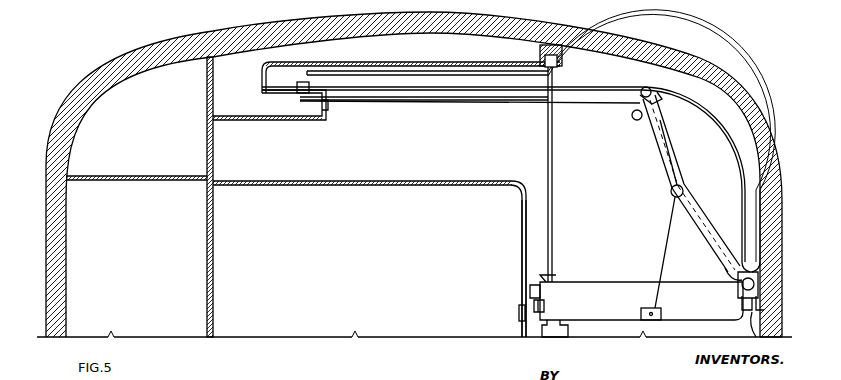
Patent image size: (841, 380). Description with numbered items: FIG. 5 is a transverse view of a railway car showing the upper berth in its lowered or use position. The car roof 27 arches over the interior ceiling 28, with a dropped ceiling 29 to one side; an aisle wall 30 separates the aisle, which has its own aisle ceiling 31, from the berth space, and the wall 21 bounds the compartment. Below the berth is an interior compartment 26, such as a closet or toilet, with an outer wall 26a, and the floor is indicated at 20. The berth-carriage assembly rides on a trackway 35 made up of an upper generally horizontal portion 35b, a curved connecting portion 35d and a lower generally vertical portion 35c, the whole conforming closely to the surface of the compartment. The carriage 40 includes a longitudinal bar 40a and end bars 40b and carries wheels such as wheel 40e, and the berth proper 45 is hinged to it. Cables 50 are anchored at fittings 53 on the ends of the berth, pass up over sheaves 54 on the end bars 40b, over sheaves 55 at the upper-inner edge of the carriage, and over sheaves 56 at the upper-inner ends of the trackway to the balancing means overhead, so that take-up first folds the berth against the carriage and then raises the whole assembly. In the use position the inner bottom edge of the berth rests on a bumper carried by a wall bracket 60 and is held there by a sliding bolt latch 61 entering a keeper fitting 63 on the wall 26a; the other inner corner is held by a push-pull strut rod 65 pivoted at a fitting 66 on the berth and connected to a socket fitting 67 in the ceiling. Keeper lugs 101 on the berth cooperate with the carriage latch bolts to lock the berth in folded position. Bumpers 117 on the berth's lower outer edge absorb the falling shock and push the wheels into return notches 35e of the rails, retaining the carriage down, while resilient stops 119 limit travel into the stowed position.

The floor 20 is at (754, 337).
The wall 21 is at (600, 223).
The interior compartment 26 is at (461, 181).
The outer wall 26a is at (522, 251).
The car roof 27 is at (598, 38).
The interior ceiling 28 is at (480, 62).
The dropped ceiling 29 is at (242, 120).
The aisle wall 30 is at (207, 253).
The aisle ceiling 31 is at (138, 180).
The trackway 35 is at (522, 92).
The upper generally horizontal portion 35b is at (441, 90).
The lower generally vertical portion 35c is at (742, 223).
The connecting portion 35d is at (732, 148).
The return notches 35e is at (768, 285).
The carriage 40 is at (668, 141).
The longitudinal bar 40a is at (644, 96).
The end bars 40b is at (700, 212).
The wheel 40e is at (766, 272).
The berth proper 45 is at (634, 282).
The cables 50 is at (500, 101).
The fittings or anchorages 53 is at (661, 312).
The sheaves 54 is at (672, 196).
The sheaves 55 is at (634, 120).
The sheaves 56 is at (298, 94).
The wall bracket 60 is at (568, 330).
The sliding bolt latch 61 is at (546, 306).
The keeper fitting 63 is at (519, 316).
The push-pull strut rod 65 is at (554, 192).
The fitting 66 is at (548, 278).
The socket fitting 67 is at (560, 45).
The keeper lugs 101 is at (530, 290).
The bumpers 117 is at (743, 324).
The resilient stop means or bumpers 119 is at (328, 112).